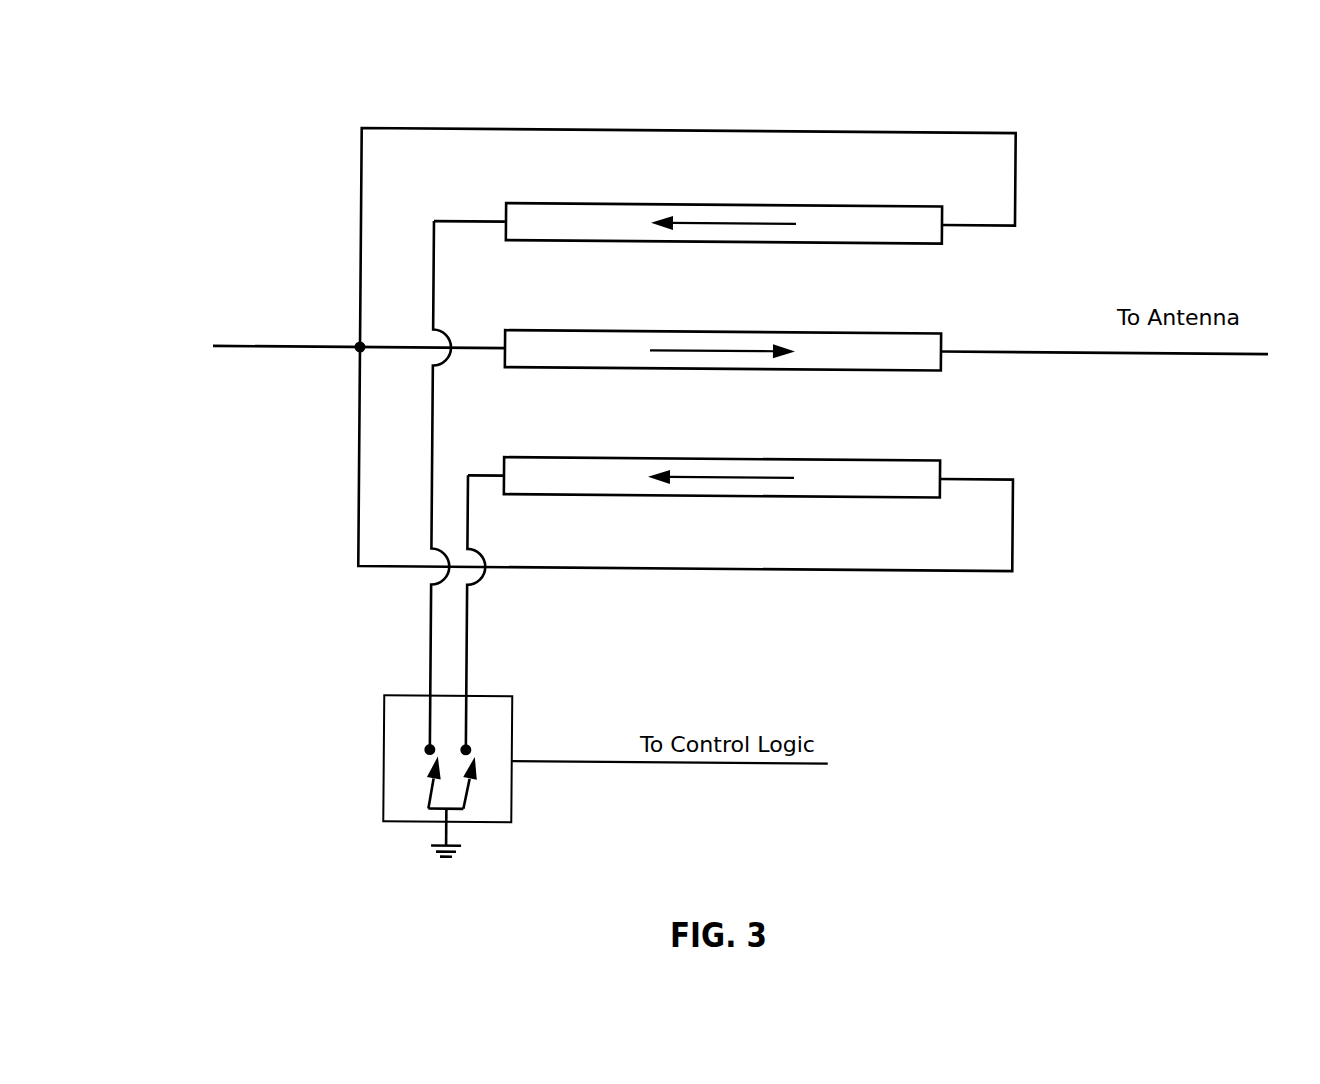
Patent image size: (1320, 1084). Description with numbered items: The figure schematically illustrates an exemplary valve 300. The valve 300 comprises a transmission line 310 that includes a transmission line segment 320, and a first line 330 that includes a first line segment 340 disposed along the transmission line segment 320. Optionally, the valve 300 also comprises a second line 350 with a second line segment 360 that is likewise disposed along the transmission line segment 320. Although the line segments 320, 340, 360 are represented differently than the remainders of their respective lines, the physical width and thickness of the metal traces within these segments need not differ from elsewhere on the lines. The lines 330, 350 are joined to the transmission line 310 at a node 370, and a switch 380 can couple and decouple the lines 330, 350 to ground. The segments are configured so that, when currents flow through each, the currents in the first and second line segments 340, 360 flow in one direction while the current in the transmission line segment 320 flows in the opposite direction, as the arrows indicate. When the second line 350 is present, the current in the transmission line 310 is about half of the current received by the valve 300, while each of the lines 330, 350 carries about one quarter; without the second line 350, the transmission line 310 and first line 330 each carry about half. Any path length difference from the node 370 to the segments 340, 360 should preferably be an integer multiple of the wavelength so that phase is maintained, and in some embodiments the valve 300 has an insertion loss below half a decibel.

The valve 300 is at (257, 130).
The transmission line 310 is at (283, 345).
The transmission line segment 320 is at (908, 333).
The first line 330 is at (357, 490).
The first line segment 340 is at (908, 460).
The second line 350 is at (1017, 188).
The second line segment 360 is at (650, 241).
The node 370 is at (357, 345).
The switch 380 is at (393, 695).